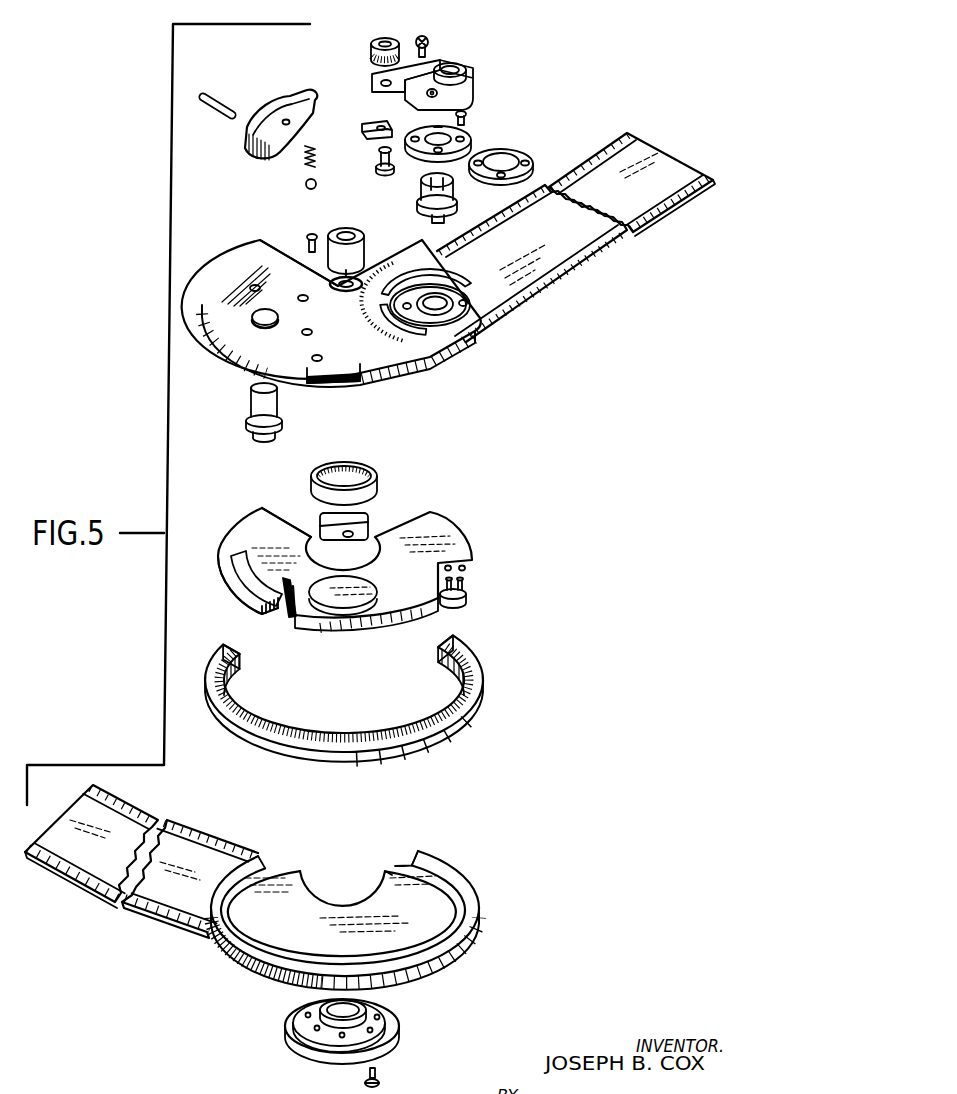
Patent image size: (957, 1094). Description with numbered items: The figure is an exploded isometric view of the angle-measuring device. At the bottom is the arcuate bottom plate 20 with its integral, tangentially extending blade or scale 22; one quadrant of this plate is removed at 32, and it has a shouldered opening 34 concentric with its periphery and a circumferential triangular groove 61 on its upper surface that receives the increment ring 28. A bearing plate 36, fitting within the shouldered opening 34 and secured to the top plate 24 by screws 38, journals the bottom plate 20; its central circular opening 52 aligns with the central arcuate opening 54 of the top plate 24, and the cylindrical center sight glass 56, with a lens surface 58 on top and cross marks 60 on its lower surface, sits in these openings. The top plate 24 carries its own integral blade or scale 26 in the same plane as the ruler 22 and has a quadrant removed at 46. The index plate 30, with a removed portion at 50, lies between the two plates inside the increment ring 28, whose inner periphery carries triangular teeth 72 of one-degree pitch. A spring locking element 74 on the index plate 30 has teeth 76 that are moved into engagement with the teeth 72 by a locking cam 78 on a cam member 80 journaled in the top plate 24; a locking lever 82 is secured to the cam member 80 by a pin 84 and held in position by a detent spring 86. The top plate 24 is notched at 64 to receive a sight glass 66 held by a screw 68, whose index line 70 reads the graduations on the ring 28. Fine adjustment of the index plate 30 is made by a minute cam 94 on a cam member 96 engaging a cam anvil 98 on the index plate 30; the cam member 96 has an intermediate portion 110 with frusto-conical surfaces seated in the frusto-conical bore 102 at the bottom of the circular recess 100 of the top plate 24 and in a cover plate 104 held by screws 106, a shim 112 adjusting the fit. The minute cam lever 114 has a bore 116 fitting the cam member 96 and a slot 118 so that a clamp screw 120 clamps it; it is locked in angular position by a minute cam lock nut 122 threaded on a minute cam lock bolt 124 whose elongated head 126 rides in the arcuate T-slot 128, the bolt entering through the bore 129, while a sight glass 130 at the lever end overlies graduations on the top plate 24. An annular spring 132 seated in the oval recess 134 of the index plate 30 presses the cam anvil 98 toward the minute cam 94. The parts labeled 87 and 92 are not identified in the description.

The bottom plate 20 is at (440, 915).
The blade or scale 22 is at (92, 885).
The top plate 24 is at (232, 262).
The blade or scale 26 is at (556, 286).
The increment ring 28 is at (481, 676).
The index plate 30 is at (440, 514).
The removed quadrant 32 is at (392, 868).
The shouldered opening 34 is at (299, 884).
The bearing plate 36 is at (294, 1026).
The screws 38 is at (380, 1082).
The removed quadrant 46 is at (264, 245).
The removed portion 50 is at (318, 522).
The central circular opening 52 is at (376, 1011).
The central arcuate opening 54 is at (344, 291).
The center sight glass 56 is at (366, 252).
The lens surface 58 is at (349, 233).
The cross marks 60 is at (346, 285).
The triangular groove 61 is at (432, 860).
The notch 64 is at (346, 385).
The sight glass 66 is at (368, 518).
The screw 68 is at (310, 233).
The index line 70 is at (346, 539).
The triangular teeth 72 is at (455, 670).
The spring locking element 74 is at (231, 572).
The triangular teeth 76 is at (258, 612).
The locking cam 78 is at (268, 440).
The cam member 80 is at (250, 396).
The locking lever 82 is at (290, 100).
The pin 84 is at (216, 103).
The spring 86 is at (307, 161).
The ball 87 is at (306, 186).
The curved slot 92 is at (231, 556).
The minute cam 94 is at (433, 222).
The cam member 96 is at (420, 190).
The cam anvil 98 is at (466, 604).
The circular recess 100 is at (444, 288).
The frusto-conical bore 102 is at (453, 300).
The cover plate 104 is at (466, 131).
The screws 106 is at (468, 116).
The intermediate portion 110 is at (449, 208).
The shim 112 is at (520, 160).
The minute cam lever 114 is at (466, 98).
The bore 116 is at (466, 72).
The slot 118 is at (445, 63).
The clamp screw 120 is at (429, 45).
The minute cam lock nut 122 is at (372, 50).
The minute cam lock bolt 124 is at (381, 153).
The laterally elongated head 126 is at (378, 172).
The T-slot 128 is at (428, 336).
The bore 129 is at (452, 268).
The sight glass 130 is at (364, 127).
The spring 132 is at (375, 468).
The recess 134 is at (340, 608).